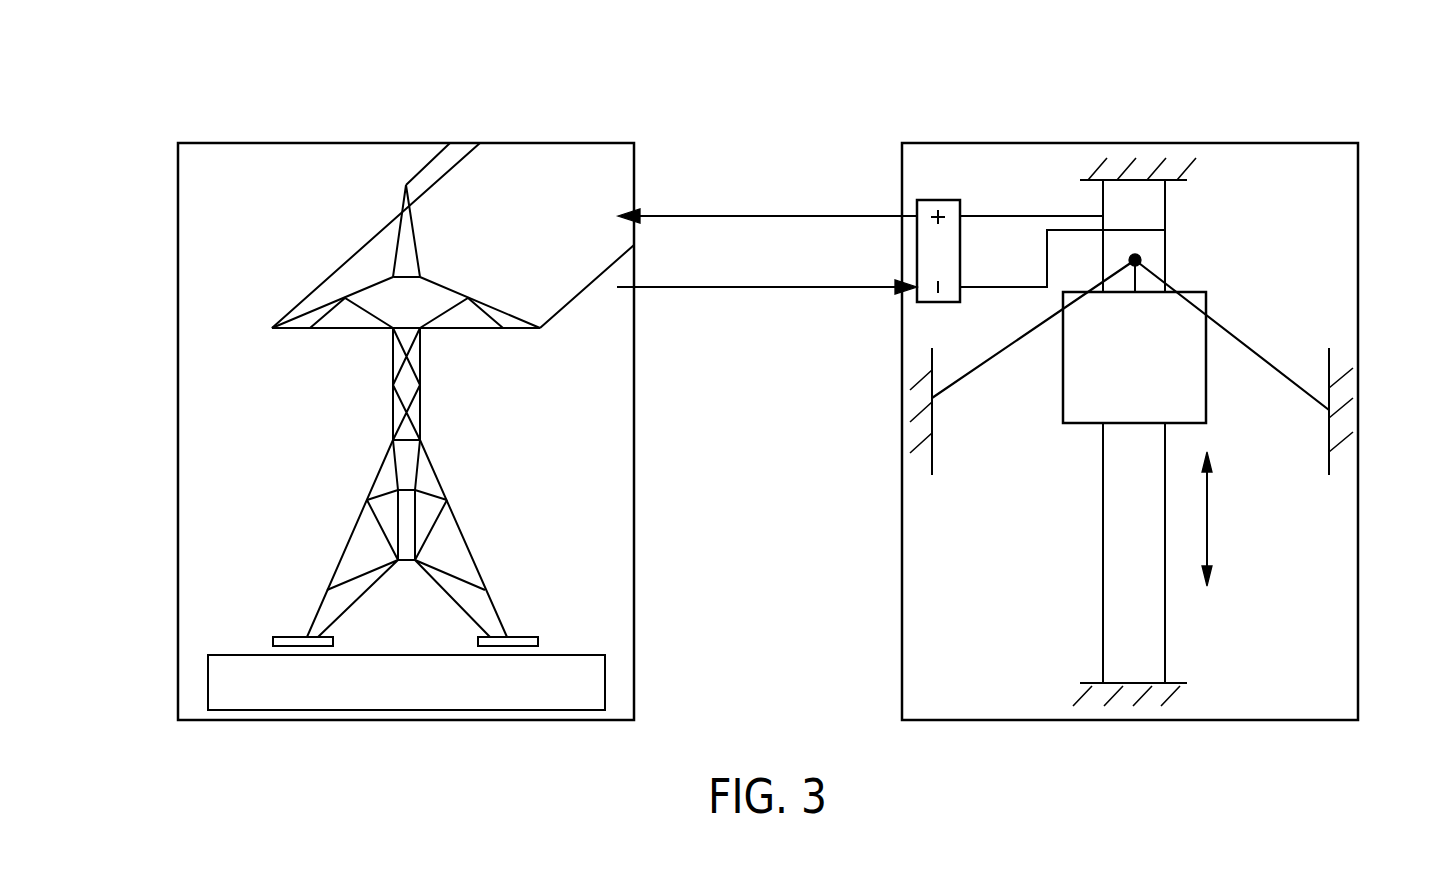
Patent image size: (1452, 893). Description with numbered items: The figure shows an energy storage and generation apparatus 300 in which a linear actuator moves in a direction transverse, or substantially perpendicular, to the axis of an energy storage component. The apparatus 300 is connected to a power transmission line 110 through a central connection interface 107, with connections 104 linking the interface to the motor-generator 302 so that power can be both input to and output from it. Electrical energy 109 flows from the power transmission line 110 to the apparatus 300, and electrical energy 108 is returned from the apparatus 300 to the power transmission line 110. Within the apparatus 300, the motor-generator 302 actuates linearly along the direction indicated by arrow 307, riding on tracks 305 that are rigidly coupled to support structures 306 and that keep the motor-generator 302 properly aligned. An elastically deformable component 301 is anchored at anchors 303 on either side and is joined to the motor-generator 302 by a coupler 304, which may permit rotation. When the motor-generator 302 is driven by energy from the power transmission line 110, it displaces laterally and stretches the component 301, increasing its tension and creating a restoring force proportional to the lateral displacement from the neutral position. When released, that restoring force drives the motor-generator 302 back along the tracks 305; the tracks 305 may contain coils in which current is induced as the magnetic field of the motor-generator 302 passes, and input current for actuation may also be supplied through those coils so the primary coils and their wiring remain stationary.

The power transmission line 110 is at (588, 143).
The electrical energy 108 is at (756, 216).
The electrical energy 109 is at (714, 290).
The central connection interface 107 is at (948, 200).
The connections 104 is at (980, 216).
The energy storage and generation apparatus 300 is at (1260, 64).
The elastically deformable component 301 is at (992, 360).
The motor-generator 302 is at (1192, 290).
The anchors 303 is at (932, 427).
The coupler 304 is at (1140, 258).
The tracks 305 is at (1103, 500).
The support structures 306 is at (1143, 180).
The arrow 307 is at (1208, 538).